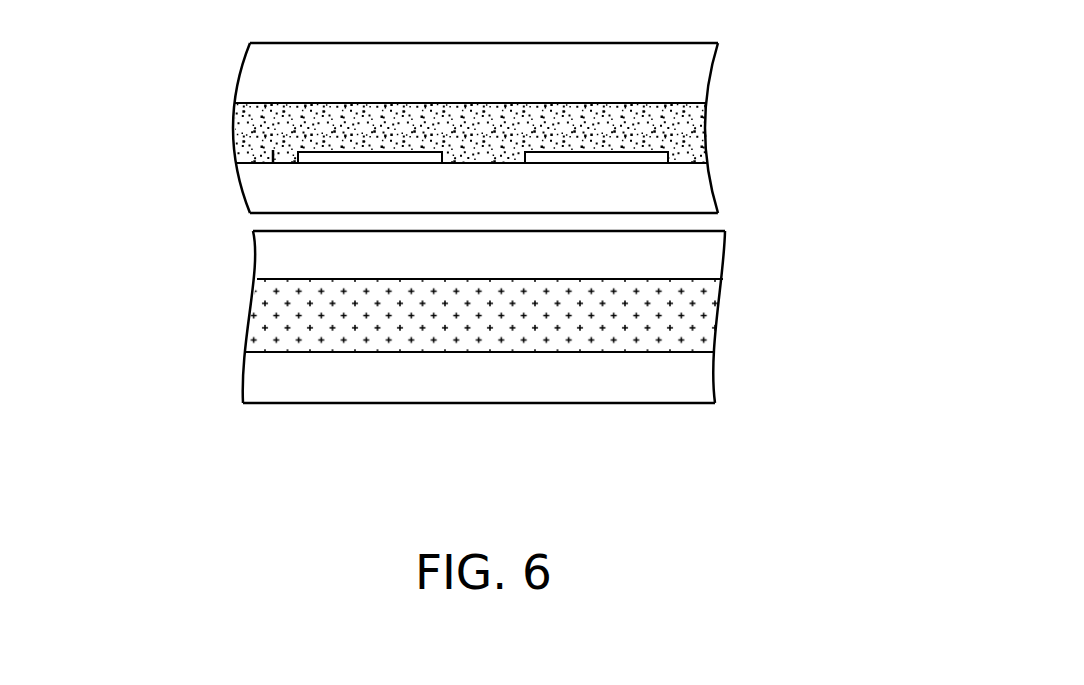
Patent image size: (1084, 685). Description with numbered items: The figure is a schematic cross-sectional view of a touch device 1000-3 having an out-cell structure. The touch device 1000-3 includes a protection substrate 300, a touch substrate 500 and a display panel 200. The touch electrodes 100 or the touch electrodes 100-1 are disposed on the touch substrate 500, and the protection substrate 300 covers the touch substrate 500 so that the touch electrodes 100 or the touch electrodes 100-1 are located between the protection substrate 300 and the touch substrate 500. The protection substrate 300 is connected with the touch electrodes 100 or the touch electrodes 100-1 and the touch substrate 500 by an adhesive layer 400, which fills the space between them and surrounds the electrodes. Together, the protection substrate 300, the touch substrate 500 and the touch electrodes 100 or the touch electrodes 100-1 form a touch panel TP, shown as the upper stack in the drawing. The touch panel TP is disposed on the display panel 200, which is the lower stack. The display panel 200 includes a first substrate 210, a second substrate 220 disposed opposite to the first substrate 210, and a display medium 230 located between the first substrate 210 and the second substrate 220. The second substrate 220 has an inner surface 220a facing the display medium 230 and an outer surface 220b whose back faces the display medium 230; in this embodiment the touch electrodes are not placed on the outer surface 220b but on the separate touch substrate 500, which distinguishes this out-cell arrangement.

The touch electrodes 100 is at (480, 129).
The touch electrodes 100-1 is at (657, 158).
The display panel 200 is at (508, 317).
The first substrate 210 is at (694, 380).
The second substrate 220 is at (702, 257).
The inner surface 220a is at (289, 280).
The outer surface 220b is at (273, 163).
The display medium 230 is at (694, 318).
The protection substrate 300 is at (683, 75).
The adhesive layer 400 is at (670, 120).
The touch substrate 500 is at (703, 192).
The touch panel TP is at (507, 128).
The touch device 1000-3 is at (507, 281).